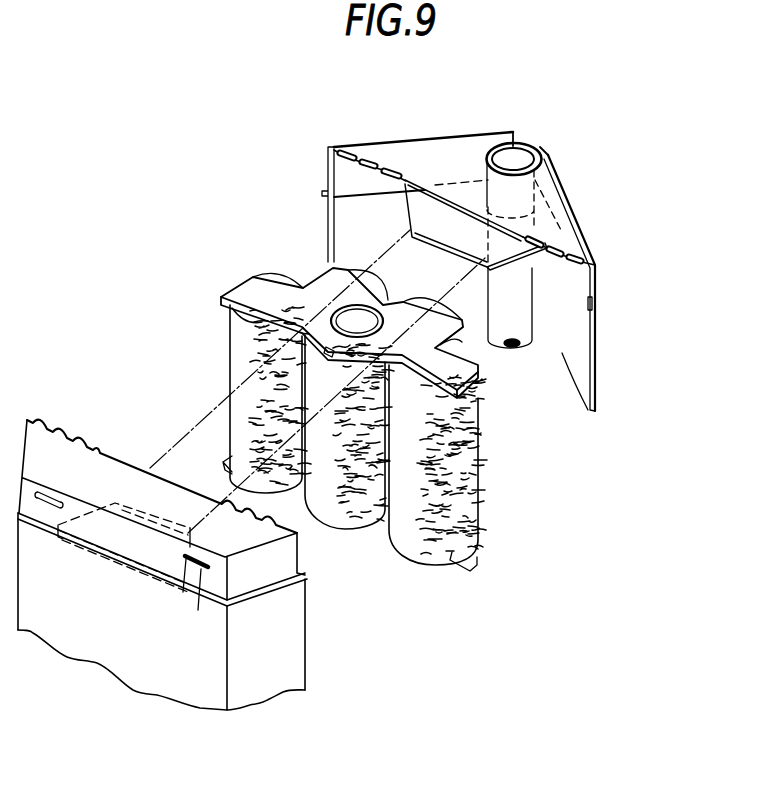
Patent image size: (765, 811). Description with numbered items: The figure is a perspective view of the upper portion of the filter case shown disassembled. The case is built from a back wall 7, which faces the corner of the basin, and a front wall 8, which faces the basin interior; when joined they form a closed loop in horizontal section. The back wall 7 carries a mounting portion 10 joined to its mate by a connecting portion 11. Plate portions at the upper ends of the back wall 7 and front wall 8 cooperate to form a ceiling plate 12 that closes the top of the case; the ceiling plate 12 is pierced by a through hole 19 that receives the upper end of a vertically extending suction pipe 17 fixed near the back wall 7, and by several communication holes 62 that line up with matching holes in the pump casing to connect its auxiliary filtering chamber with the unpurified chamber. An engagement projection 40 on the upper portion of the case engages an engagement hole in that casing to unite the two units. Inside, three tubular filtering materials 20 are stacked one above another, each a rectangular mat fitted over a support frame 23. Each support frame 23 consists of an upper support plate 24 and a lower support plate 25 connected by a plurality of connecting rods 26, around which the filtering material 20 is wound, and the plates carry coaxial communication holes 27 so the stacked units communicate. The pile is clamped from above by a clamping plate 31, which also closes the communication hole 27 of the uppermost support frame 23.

The back wall 7 is at (459, 249).
The front wall 8 is at (162, 582).
The mounting portion 10 is at (596, 283).
The connecting portion 11 is at (327, 168).
The ceiling plate 12 is at (441, 142).
The suction pipe 17 is at (521, 304).
The through hole 19 is at (520, 146).
The tubular filtering material 20 is at (475, 493).
The support frame 23 is at (374, 435).
The upper support plate 24 is at (369, 333).
The lower support plate 25 is at (462, 571).
The connecting rod 26 is at (331, 355).
The communication hole 27 is at (366, 300).
The clamping plate 31 is at (428, 220).
The engagement projection 40 is at (196, 570).
The communication hole 62 is at (382, 165).